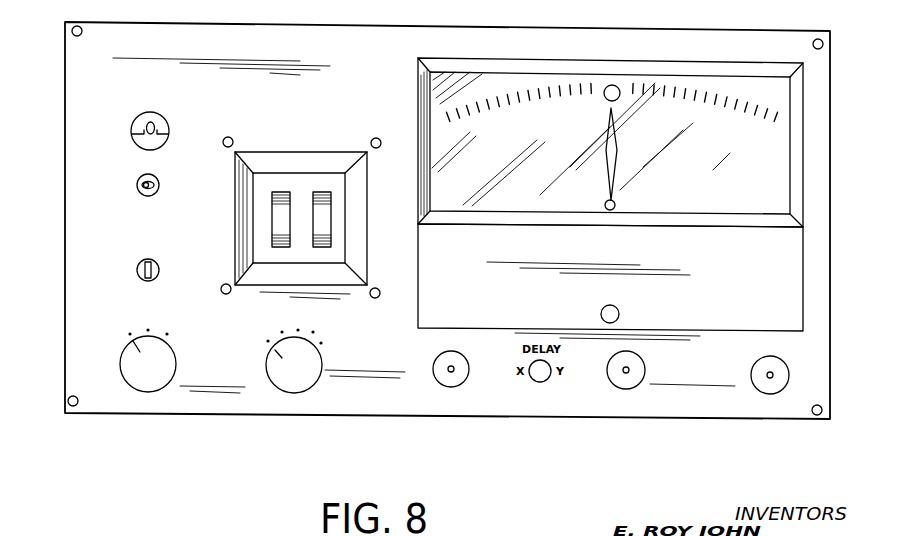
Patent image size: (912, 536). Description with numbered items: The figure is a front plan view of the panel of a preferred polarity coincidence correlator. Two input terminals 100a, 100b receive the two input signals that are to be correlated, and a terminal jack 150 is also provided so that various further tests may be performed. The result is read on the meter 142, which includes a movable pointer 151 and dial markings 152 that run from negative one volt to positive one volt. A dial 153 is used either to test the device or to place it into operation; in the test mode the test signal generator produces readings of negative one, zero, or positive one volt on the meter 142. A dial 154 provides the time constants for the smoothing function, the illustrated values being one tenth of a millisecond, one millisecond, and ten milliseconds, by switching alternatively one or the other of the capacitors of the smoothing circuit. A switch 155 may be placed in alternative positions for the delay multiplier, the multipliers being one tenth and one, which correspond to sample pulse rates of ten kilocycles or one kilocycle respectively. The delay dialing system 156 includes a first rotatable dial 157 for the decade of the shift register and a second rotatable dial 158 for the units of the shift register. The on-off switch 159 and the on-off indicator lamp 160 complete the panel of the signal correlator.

The meter 142 is at (780, 176).
The movable pointer 151 is at (617, 148).
The dial markings 152 is at (548, 84).
The dial 153 is at (297, 392).
The dial 154 is at (120, 371).
The switch 155 is at (138, 277).
The delay dialing system 156 is at (351, 126).
The first rotatable dial 157 is at (272, 202).
The second rotatable dial 158 is at (332, 210).
The on-off switch 159 is at (137, 188).
The on-off indicator lamp 160 is at (131, 129).
The input terminal 100a is at (450, 387).
The input terminal 100b is at (623, 390).
The terminal jack 150 is at (768, 394).